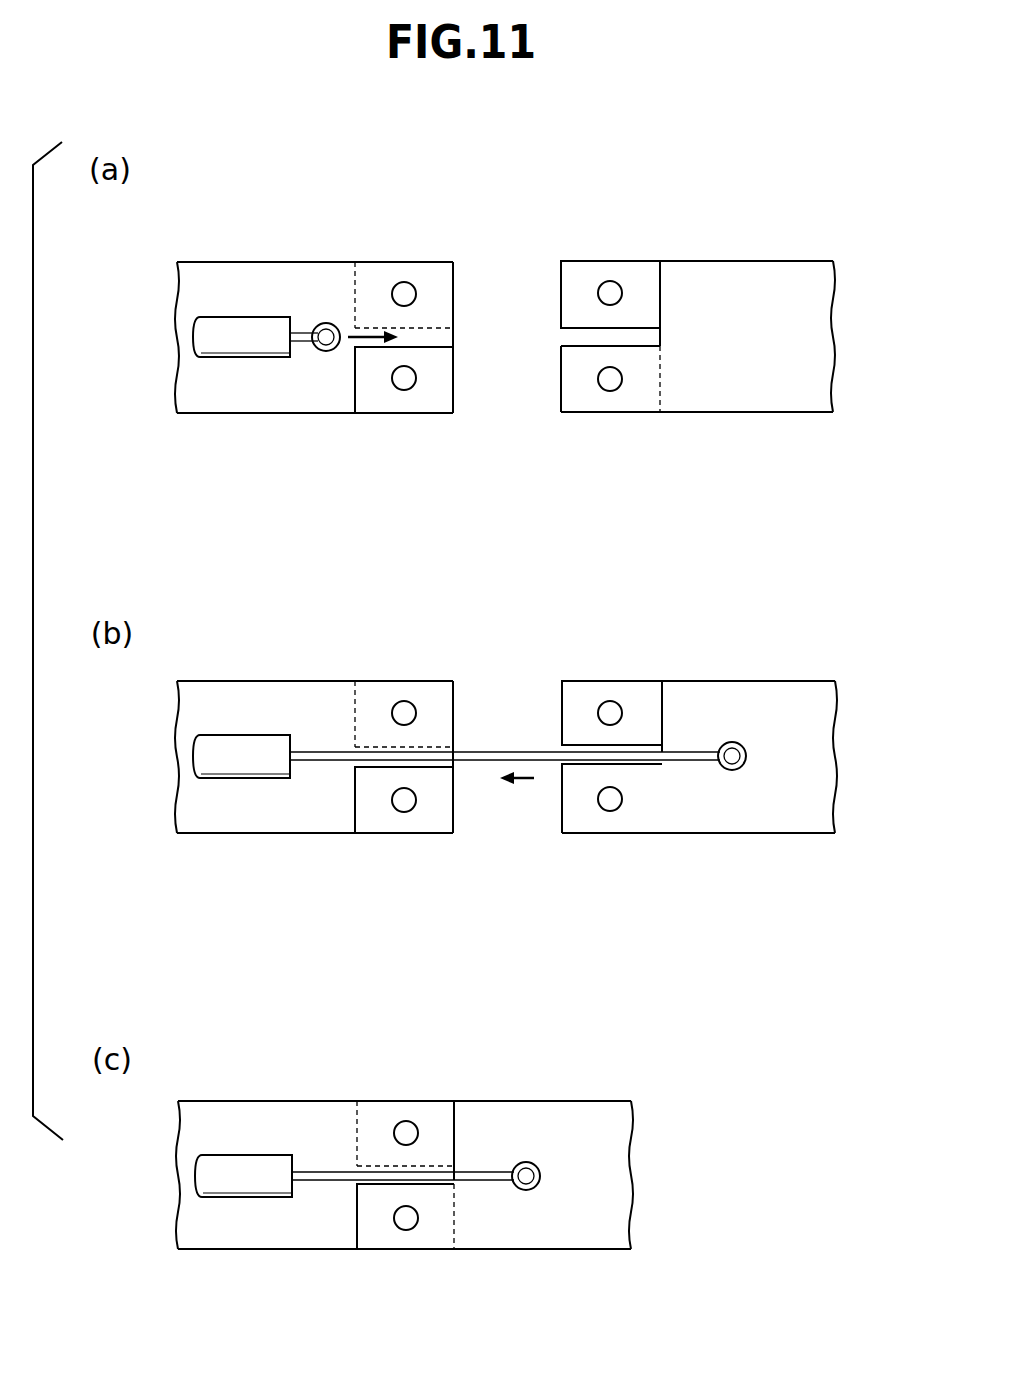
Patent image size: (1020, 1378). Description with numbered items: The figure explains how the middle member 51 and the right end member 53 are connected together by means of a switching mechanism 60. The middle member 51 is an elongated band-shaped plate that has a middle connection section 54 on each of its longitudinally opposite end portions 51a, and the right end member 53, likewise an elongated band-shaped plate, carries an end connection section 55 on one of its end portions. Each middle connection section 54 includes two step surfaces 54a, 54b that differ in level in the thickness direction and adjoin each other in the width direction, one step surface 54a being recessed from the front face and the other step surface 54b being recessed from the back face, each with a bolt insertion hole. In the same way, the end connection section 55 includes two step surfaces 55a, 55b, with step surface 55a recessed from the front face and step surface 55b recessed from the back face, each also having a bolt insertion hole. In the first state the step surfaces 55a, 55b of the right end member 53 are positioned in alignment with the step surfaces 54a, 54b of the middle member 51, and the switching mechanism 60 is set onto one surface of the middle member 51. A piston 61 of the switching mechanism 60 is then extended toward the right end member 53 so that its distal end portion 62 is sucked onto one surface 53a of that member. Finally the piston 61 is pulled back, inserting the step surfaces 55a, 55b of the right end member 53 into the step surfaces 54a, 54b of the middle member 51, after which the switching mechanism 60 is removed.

The middle member 51 is at (228, 260).
The end portion of the middle member 51a is at (305, 283).
The right end member 53 is at (801, 259).
The surface of second plate 53a is at (722, 306).
The middle connection section 54 is at (536, 721).
The step surface 54a is at (536, 750).
The step surface 54b is at (508, 667).
The end connection section 55 is at (720, 163).
The step surface 55a is at (583, 273).
The step surface 55b is at (658, 372).
The switching mechanism 60 is at (230, 348).
The piston 61 is at (303, 348).
The distal end portion 62 is at (333, 353).